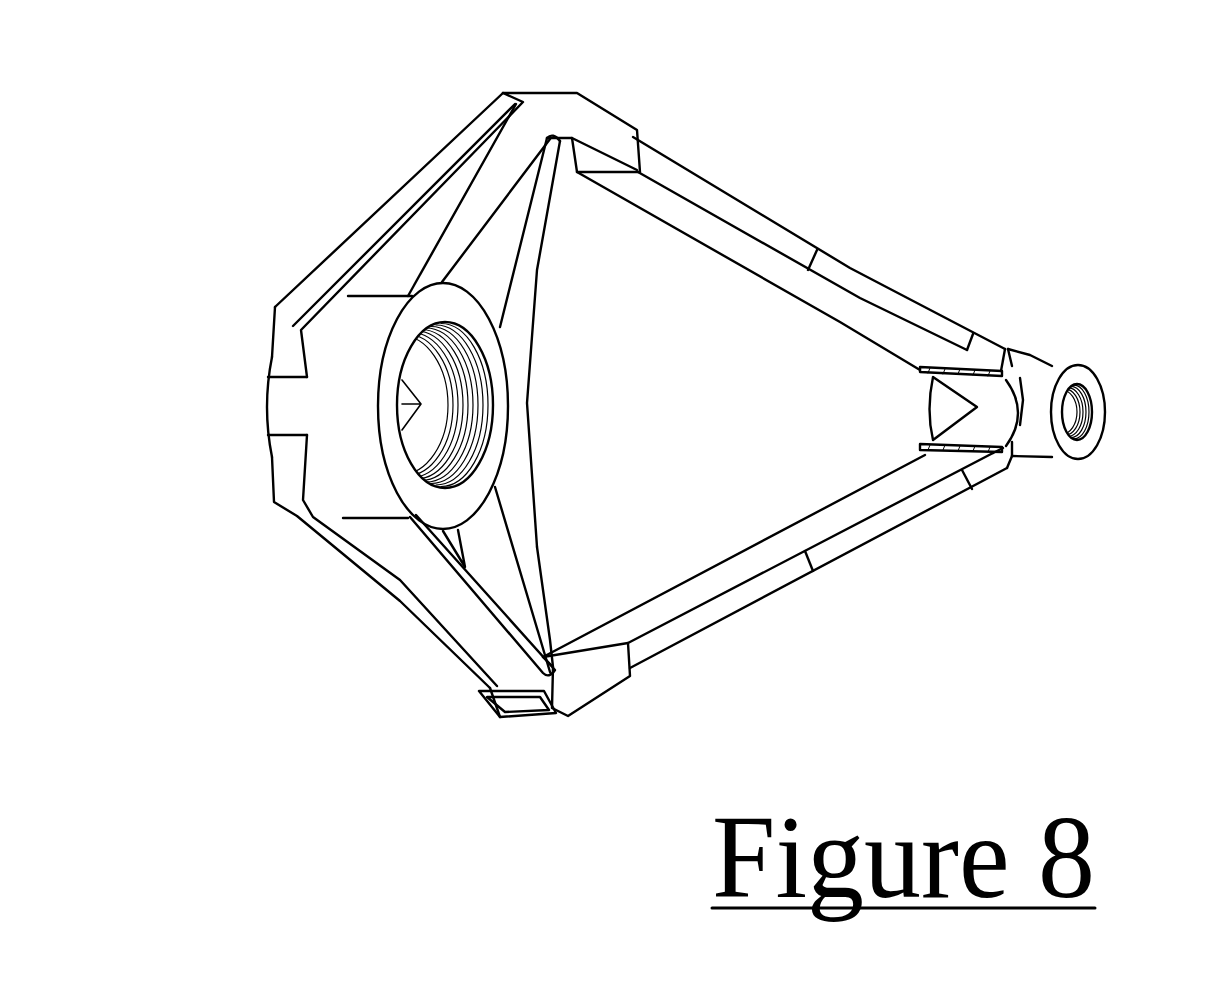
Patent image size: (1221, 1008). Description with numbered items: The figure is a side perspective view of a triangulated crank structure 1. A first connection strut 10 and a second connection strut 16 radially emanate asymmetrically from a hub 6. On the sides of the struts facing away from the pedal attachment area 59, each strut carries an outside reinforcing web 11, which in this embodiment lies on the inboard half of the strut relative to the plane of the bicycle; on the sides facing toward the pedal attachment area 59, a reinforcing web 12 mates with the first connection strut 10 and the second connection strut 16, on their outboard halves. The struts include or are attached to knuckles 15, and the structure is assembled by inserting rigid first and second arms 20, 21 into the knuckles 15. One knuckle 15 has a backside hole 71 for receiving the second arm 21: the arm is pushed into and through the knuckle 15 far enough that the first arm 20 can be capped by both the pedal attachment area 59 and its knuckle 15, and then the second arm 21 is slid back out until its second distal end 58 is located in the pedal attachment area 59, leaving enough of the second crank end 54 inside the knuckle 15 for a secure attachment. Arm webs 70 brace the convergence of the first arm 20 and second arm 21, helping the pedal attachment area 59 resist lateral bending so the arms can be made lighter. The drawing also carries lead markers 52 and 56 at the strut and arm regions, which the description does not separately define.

The structure 1 is at (873, 140).
The hub 6 is at (266, 427).
The first connection strut 10 is at (517, 202).
The reinforcing web 11 is at (417, 172).
The reinforcing web 12 is at (538, 331).
The knuckle 15 is at (552, 92).
The second connection strut 16 is at (549, 638).
The first arm 20 is at (778, 222).
The second arm 21 is at (790, 584).
The upper joint 52 is at (673, 138).
The second crank end 54 is at (667, 673).
The upper strut end 56 is at (975, 312).
The second distal end 58 is at (973, 508).
The pedal attachment area 59 is at (1085, 350).
The arm web 70 is at (925, 425).
The backside hole 71 is at (520, 713).